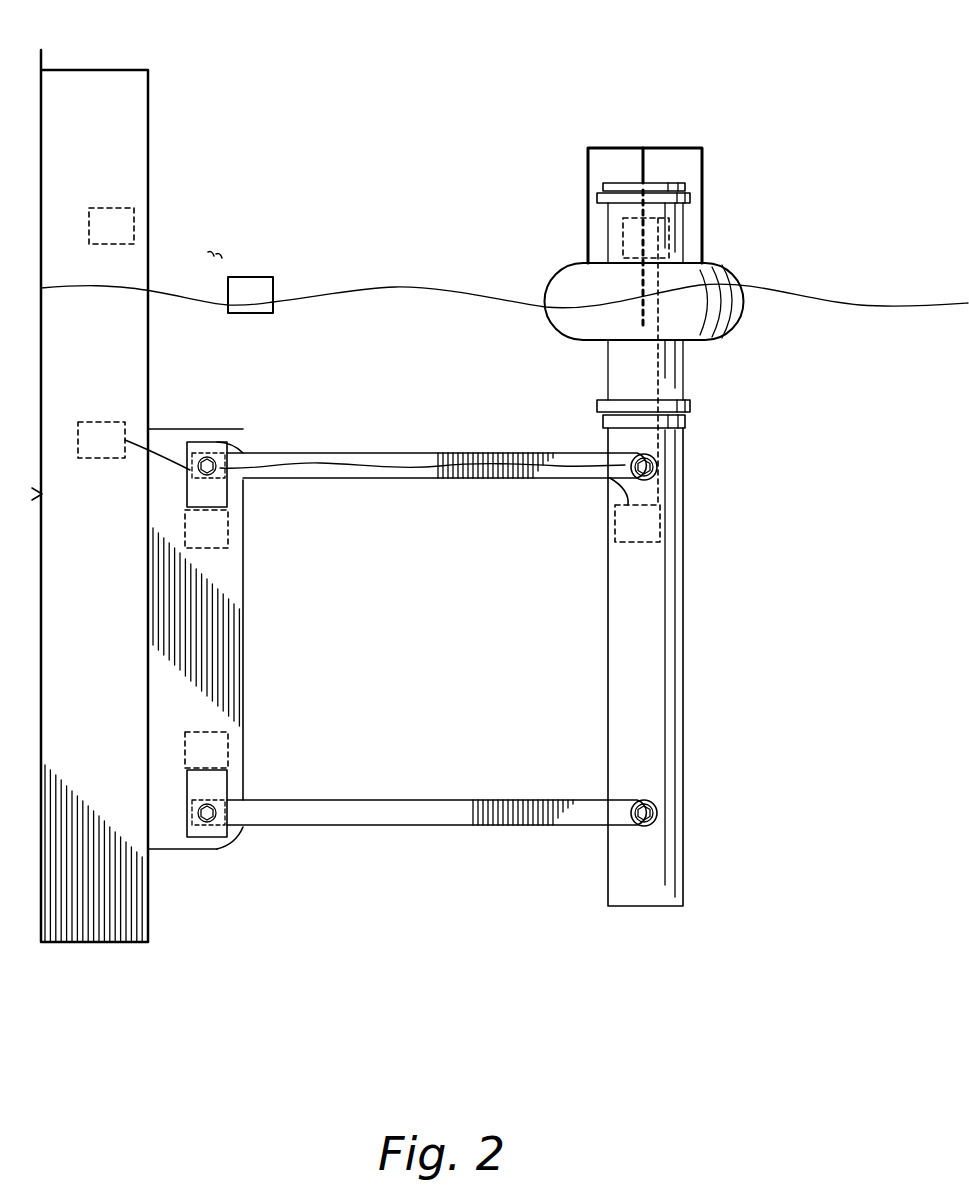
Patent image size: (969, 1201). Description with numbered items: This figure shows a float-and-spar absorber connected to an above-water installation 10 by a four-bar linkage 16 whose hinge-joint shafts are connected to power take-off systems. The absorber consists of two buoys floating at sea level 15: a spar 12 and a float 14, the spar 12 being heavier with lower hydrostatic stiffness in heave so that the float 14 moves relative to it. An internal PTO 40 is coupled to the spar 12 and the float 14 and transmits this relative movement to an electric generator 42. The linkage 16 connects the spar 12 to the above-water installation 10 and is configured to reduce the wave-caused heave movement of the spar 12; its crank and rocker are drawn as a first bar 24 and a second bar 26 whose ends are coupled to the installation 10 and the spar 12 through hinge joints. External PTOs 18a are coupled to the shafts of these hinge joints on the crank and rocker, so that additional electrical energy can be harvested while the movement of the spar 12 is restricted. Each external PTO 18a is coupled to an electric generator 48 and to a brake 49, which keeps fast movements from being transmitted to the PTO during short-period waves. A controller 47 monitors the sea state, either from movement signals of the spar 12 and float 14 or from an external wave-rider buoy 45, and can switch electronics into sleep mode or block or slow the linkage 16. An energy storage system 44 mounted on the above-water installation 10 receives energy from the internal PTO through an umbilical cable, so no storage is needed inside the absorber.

The above-water installation 10 is at (97, 70).
The spar 12 is at (607, 230).
The float 14 is at (715, 264).
The sea level 15 is at (395, 287).
The linkage 16 is at (395, 452).
The external PTO 18a is at (227, 498).
The first bar 24 is at (493, 452).
The second bar 26 is at (473, 800).
The internal PTO 40 is at (668, 240).
The electric generator 42 is at (660, 528).
The energy storage system 44 is at (103, 422).
The external wave-rider buoy 45 is at (258, 277).
The controller 47 is at (118, 208).
The electric generator 48 is at (228, 548).
The brake 49 is at (205, 452).